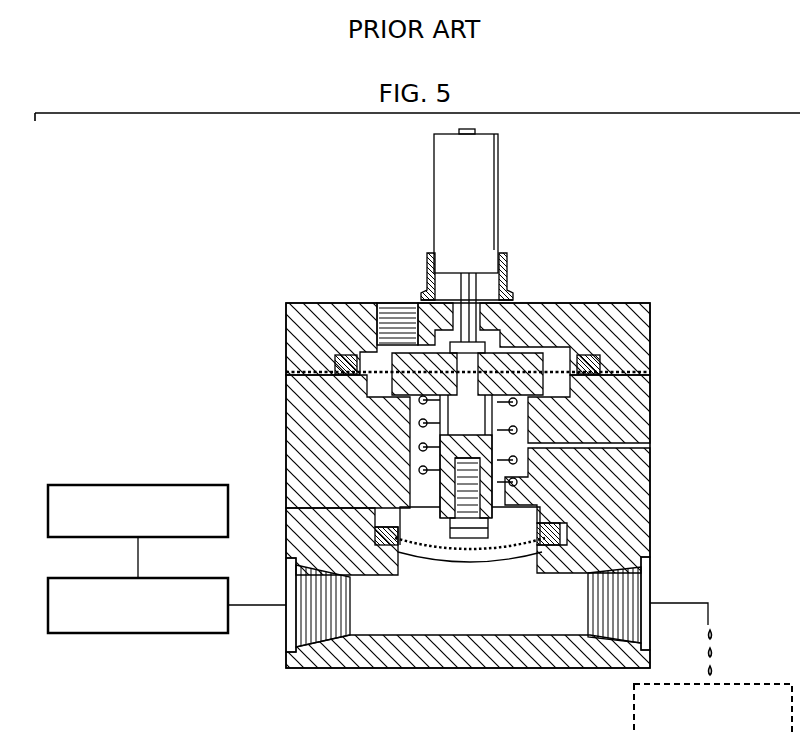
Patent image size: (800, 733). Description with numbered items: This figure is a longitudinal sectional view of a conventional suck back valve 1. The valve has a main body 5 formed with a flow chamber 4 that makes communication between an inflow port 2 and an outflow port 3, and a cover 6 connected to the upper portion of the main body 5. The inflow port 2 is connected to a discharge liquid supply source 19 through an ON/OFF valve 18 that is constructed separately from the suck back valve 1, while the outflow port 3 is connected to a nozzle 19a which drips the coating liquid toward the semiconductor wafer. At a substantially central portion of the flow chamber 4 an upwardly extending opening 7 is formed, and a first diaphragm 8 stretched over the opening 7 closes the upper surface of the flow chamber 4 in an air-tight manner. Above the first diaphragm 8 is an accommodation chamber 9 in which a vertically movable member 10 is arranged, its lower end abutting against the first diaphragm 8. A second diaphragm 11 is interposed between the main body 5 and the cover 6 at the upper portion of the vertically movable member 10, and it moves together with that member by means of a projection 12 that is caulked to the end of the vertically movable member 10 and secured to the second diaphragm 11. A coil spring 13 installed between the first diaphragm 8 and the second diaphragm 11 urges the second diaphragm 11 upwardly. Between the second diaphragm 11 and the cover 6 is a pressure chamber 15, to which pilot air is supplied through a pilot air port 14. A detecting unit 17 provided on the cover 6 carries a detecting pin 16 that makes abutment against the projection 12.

The suck back valve 1 is at (644, 172).
The inflow port 2 is at (296, 578).
The outflow port 3 is at (622, 595).
The flow chamber 4 is at (482, 608).
The main body 5 is at (286, 445).
The cover 6 is at (335, 325).
The opening 7 is at (398, 565).
The first diaphragm 8 is at (514, 553).
The accommodation chamber 9 is at (565, 520).
The vertically movable member 10 is at (510, 475).
The second diaphragm 11 is at (620, 362).
The projection 12 is at (470, 345).
The coil spring 13 is at (530, 405).
The pilot air port 14 is at (395, 323).
The pressure chamber 15 is at (345, 358).
The detecting pin 16 is at (505, 293).
The detecting unit 17 is at (498, 190).
The ON/OFF valve 18 is at (200, 578).
The discharge liquid supply source 19 is at (200, 485).
The nozzle 19a is at (712, 619).